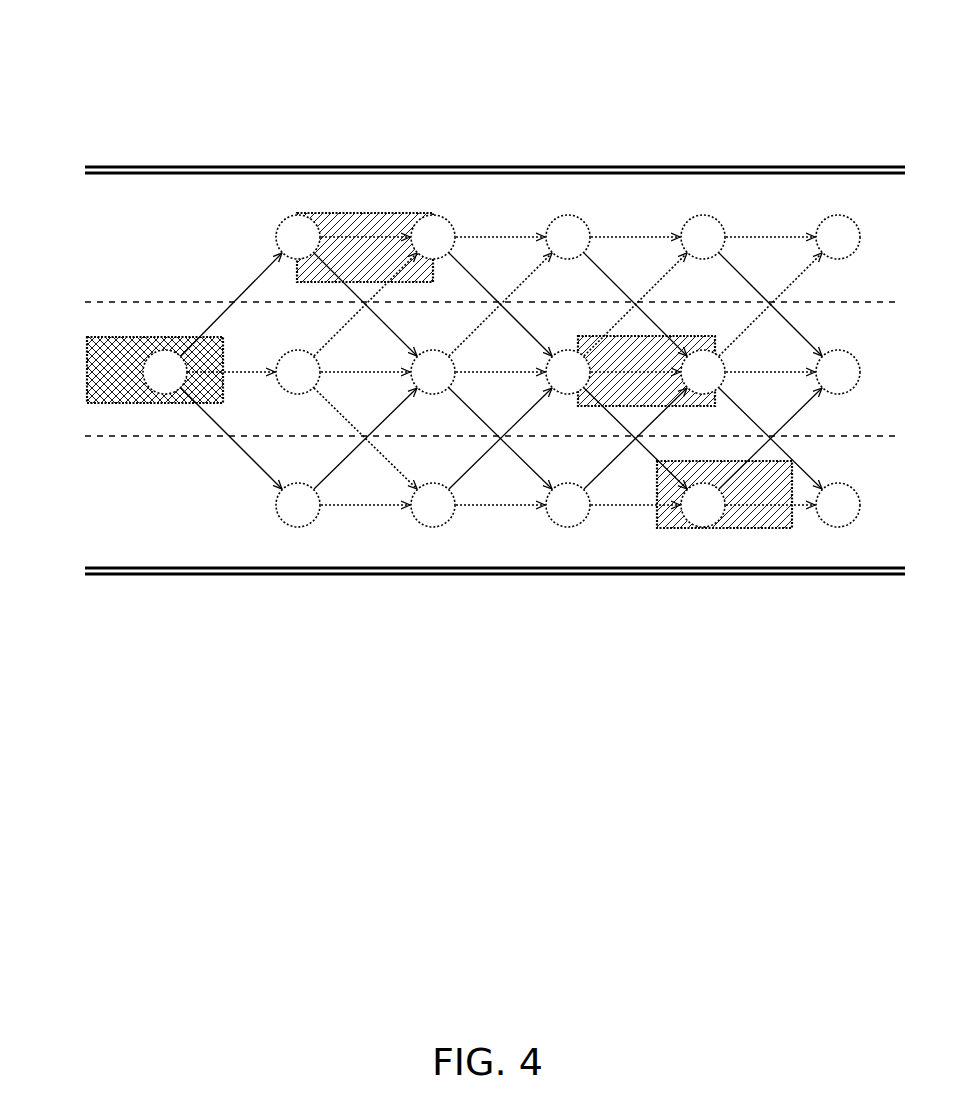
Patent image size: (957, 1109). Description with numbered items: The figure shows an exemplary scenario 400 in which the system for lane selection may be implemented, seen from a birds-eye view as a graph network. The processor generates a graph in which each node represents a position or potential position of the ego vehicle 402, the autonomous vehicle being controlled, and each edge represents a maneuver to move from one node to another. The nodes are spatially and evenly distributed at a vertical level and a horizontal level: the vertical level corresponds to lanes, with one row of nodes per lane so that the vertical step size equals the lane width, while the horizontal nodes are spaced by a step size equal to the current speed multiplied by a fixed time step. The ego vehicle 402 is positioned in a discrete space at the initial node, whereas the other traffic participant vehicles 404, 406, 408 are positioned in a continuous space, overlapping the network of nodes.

The exemplary scenario 400 is at (112, 50).
The ego vehicle 402 is at (87, 392).
The traffic participant vehicle 404 is at (406, 213).
The traffic participant vehicle 406 is at (632, 337).
The traffic participant vehicle 408 is at (657, 508).